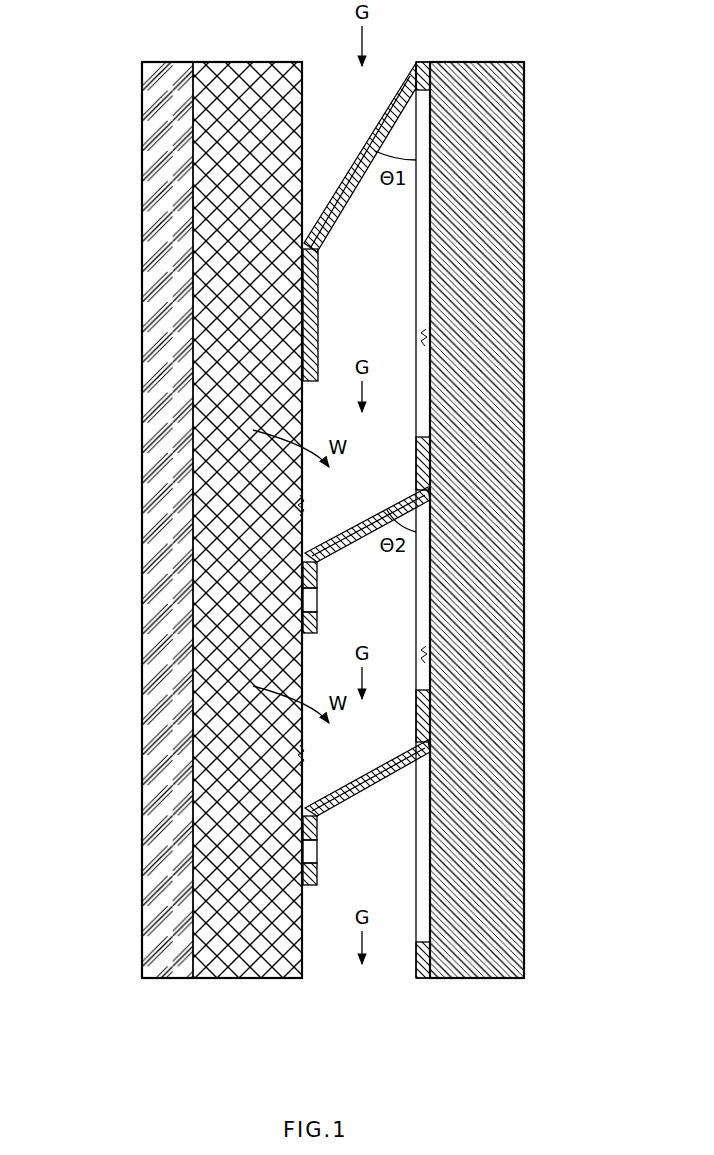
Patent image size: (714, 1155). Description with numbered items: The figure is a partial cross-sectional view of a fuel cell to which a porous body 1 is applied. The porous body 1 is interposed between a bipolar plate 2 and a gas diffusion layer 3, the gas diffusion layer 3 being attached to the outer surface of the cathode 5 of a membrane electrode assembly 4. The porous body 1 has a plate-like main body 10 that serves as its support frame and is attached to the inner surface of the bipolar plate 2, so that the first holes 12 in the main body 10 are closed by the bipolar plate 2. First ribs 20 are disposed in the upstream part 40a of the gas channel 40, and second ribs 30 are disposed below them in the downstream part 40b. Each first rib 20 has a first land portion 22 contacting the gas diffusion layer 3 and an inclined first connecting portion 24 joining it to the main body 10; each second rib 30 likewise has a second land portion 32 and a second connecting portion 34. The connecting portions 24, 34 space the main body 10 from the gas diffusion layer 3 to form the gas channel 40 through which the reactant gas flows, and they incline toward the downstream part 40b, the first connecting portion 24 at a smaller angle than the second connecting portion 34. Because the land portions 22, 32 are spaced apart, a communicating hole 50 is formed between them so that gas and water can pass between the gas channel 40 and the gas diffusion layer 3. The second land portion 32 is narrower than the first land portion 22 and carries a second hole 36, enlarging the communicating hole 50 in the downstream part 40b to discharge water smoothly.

The porous body 1 is at (452, 487).
The bipolar plate 2 is at (510, 771).
The gas diffusion layer 3 is at (198, 307).
The membrane electrode assembly 4 is at (179, 520).
The cathode 5 is at (152, 244).
The main body 10 is at (424, 447).
The first holes 12 is at (427, 337).
The first ribs 20 is at (470, 222).
The first land portion 22 is at (320, 298).
The first connecting portion 24 is at (353, 198).
The second ribs 30 is at (470, 560).
The second land portion 32 is at (441, 597).
The second connecting portion 34 is at (372, 533).
The second hole 36 is at (319, 597).
The gas channel 40 is at (369, 562).
The upstream part 40a is at (397, 78).
The downstream part 40b is at (397, 965).
The communicating hole 50 is at (302, 505).